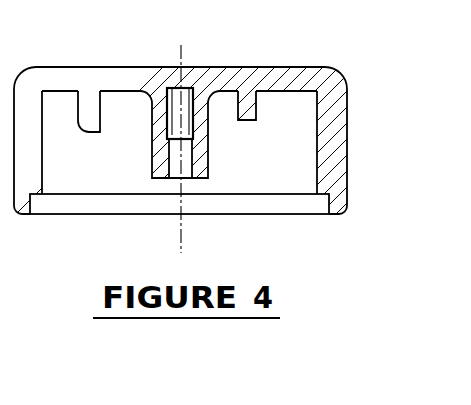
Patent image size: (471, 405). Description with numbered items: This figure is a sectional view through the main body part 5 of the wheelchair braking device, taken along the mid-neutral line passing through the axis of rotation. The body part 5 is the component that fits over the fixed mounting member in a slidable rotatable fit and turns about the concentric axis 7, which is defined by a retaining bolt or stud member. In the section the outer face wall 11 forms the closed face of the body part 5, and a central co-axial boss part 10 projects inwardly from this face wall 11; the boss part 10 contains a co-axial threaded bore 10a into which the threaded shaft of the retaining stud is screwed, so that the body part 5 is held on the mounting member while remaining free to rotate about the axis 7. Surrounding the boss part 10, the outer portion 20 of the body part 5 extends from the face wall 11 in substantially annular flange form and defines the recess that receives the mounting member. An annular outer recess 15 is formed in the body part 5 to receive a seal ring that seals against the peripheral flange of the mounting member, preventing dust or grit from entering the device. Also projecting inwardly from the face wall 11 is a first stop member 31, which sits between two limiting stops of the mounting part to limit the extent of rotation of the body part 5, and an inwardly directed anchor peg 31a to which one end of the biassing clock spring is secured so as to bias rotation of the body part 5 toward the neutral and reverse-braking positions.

The main body part 5 is at (231, 67).
The concentric axis 7 is at (181, 245).
The central co-axial boss part 10 is at (151, 164).
The co-axial threaded bore 10a is at (175, 118).
The outer face wall 11 is at (107, 78).
The annular outer recess 15 is at (36, 203).
The outer portion 20 is at (333, 179).
The first stop member 31 is at (92, 112).
The anchor peg 31a is at (256, 107).